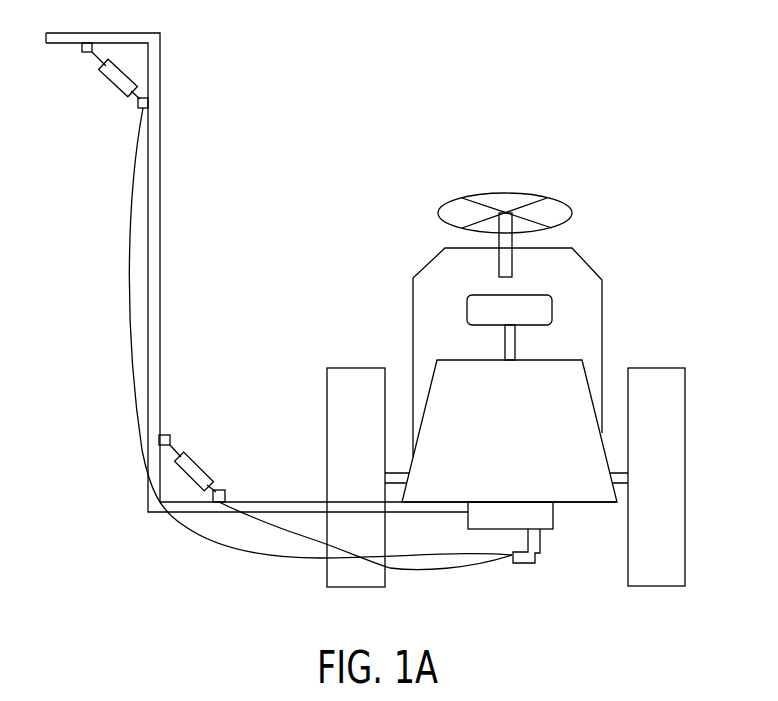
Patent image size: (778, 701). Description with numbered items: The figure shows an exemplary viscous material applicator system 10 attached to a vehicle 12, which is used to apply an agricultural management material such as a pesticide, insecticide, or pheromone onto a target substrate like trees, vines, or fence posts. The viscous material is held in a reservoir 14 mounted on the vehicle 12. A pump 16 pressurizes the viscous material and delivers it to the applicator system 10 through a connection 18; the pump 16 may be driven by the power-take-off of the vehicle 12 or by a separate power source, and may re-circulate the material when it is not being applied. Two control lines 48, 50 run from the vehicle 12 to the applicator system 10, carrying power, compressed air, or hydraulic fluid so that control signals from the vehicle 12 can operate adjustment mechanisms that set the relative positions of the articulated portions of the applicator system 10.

The viscous material applicator system 10 is at (185, 176).
The vehicle 12 is at (625, 279).
The reservoir 14 is at (519, 449).
The pump 16 is at (553, 518).
The connection 18 is at (525, 563).
The control line 48 is at (458, 566).
The control line 50 is at (183, 525).